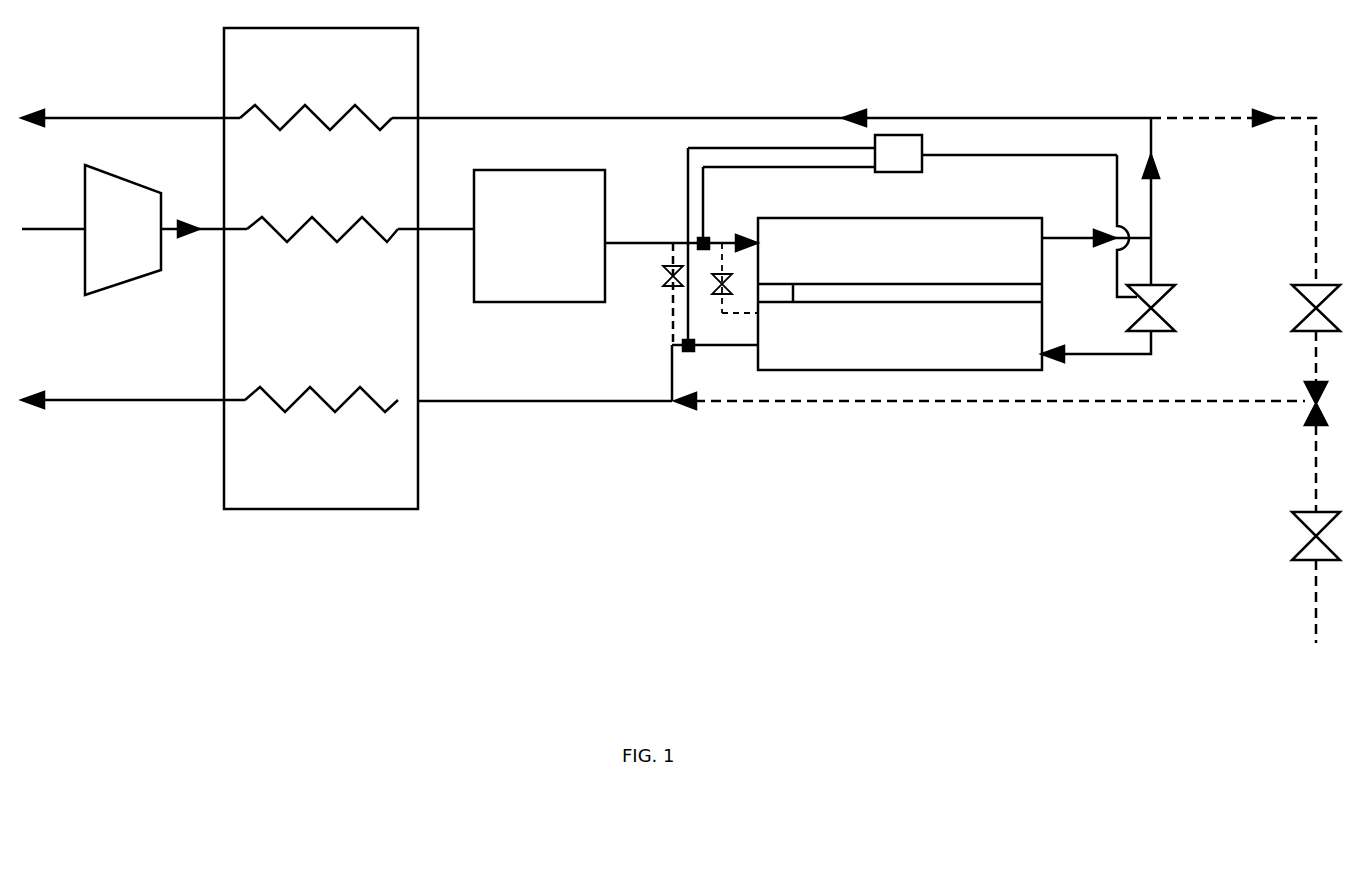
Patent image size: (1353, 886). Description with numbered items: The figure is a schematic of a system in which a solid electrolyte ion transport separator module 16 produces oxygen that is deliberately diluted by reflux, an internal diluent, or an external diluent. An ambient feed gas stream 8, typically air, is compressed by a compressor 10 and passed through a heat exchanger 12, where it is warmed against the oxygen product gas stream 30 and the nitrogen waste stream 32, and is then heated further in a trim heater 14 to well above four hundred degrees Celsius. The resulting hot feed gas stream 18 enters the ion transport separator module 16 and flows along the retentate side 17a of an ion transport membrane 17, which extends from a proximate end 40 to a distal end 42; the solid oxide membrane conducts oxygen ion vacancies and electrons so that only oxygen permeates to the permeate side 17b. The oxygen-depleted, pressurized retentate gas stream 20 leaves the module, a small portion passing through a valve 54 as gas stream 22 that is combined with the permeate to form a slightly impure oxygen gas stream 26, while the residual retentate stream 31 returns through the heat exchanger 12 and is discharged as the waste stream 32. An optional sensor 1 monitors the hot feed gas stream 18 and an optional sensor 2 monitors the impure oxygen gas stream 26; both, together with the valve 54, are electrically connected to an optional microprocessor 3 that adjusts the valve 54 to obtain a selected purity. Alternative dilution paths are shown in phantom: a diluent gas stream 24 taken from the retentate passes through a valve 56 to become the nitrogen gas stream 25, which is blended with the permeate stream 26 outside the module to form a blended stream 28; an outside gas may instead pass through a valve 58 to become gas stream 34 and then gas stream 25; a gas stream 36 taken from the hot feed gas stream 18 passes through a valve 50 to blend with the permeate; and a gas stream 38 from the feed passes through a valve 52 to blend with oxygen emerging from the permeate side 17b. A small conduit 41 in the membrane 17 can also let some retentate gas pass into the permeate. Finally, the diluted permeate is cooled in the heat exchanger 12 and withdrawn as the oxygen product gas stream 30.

The sensor 1 is at (703, 240).
The sensor 2 is at (689, 350).
The microprocessor 3 is at (905, 165).
The ambient feed gas stream 8 is at (42, 229).
The compressor 10 is at (100, 293).
The heat exchanger 12 is at (418, 68).
The trim heater 14 is at (540, 302).
The ion transport separator module 16 is at (920, 202).
The ion transport membrane 17 is at (1042, 292).
The retentate side 17a is at (895, 284).
The permeate side 17b is at (958, 302).
The hot feed gas stream 18 is at (637, 243).
The pressurized retentate gas stream 20 is at (1070, 238).
The gas stream 22 is at (1115, 354).
The diluent gas stream 24 is at (1220, 118).
The nitrogen gas stream 25 is at (888, 401).
The impure oxygen gas stream 26 is at (712, 345).
The blended stream 28 is at (560, 401).
The oxygen product gas stream 30 is at (88, 400).
The residual retentate stream 31 is at (750, 118).
The nitrogen waste stream 32 is at (97, 118).
The gas stream 34 is at (1314, 438).
The gas stream 36 is at (668, 312).
The gas stream 38 is at (722, 255).
The proximate end 40 is at (762, 284).
The conduit 41 is at (795, 295).
The distal end 42 is at (1038, 284).
The valve 50 is at (660, 266).
The valve 52 is at (718, 306).
The valve 54 is at (1172, 290).
The valve 56 is at (1298, 330).
The valve 58 is at (1300, 556).